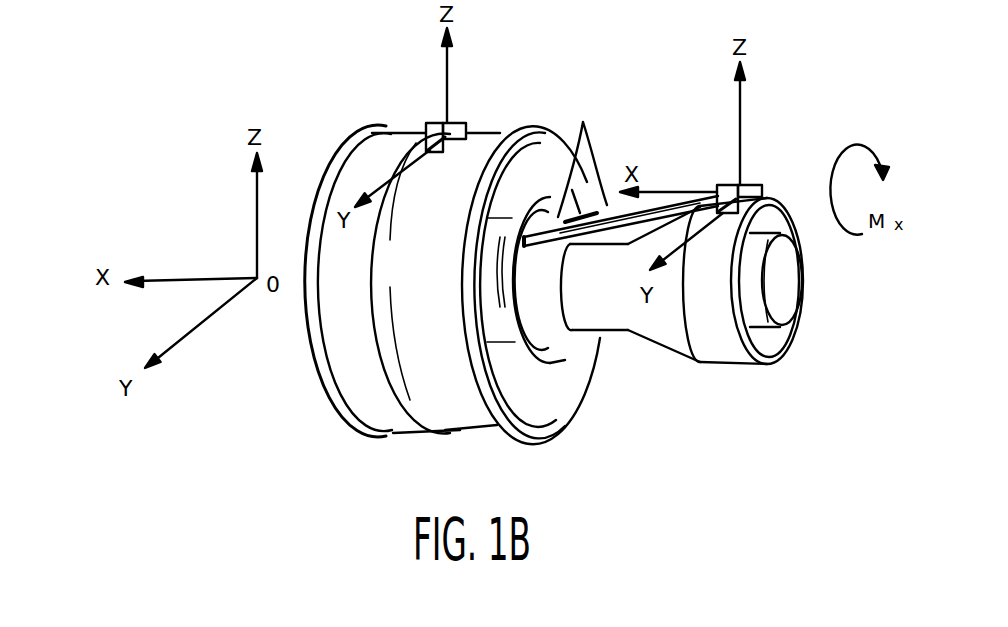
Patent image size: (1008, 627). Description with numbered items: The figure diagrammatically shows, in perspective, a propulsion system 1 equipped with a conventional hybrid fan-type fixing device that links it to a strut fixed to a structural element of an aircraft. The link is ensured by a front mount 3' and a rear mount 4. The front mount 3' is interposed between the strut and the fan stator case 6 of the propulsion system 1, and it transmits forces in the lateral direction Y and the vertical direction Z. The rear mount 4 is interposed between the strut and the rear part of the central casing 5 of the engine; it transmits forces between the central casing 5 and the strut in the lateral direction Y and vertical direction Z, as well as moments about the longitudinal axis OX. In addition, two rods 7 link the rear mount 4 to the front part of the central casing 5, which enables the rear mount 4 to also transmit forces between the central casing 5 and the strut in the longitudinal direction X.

The propulsion system 1 is at (692, 395).
The front mount 3' is at (488, 97).
The rear mount 4 is at (762, 192).
The central casing 5 is at (662, 333).
The fan stator case 6 is at (362, 378).
The rods 7 is at (583, 122).